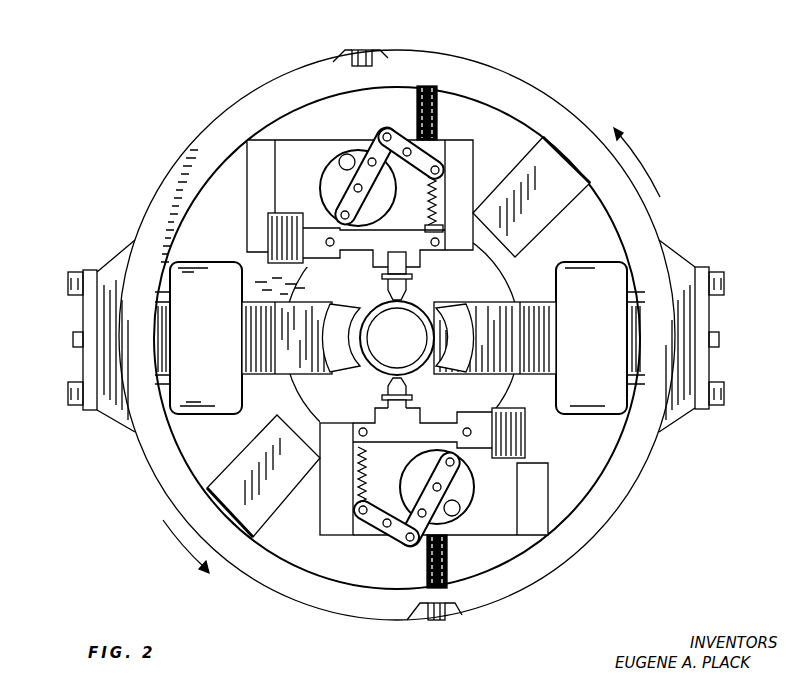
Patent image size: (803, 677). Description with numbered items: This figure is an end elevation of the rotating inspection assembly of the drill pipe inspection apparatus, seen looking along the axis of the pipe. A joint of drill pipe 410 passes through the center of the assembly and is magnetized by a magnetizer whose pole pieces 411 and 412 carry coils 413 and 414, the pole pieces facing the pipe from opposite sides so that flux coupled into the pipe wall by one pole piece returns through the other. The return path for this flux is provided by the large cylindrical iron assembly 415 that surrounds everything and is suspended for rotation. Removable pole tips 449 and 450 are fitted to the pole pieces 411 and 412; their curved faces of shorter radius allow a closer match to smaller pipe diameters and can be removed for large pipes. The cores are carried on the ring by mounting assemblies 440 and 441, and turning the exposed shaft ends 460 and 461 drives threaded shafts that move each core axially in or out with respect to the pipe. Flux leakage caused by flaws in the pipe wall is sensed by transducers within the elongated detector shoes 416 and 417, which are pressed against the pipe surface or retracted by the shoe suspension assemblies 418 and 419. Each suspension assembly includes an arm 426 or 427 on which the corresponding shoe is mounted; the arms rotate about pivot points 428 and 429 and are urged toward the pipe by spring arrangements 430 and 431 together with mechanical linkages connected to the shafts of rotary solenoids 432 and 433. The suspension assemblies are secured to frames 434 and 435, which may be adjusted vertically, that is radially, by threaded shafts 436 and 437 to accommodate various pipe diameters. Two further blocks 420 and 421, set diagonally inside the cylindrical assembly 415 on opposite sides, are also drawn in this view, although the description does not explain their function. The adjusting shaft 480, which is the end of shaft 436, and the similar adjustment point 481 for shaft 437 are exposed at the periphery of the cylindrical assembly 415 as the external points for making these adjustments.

The drill pipe 410 is at (386, 366).
The pole piece 411 is at (290, 362).
The pole piece 412 is at (490, 360).
The coil 413 is at (185, 402).
The coil 414 is at (610, 405).
The cylindrical iron assembly 415 is at (512, 86).
The detector shoe 416 is at (410, 297).
The detector shoe 417 is at (385, 393).
The shoe suspension assembly 418 is at (325, 160).
The shoe suspension assembly 419 is at (470, 512).
The upper right counterweight block 420 is at (552, 160).
The lower left counterweight block 421 is at (220, 499).
The arm 426 is at (418, 245).
The arm 427 is at (400, 438).
The pivot point 428 is at (330, 247).
The pivot point 429 is at (470, 437).
The spring arrangement 430 is at (440, 195).
The spring arrangement 431 is at (357, 488).
The rotary solenoid 432 is at (330, 191).
The rotary solenoid 433 is at (470, 497).
The frame 434 is at (290, 148).
The frame 435 is at (505, 525).
The threaded shaft 436 is at (372, 118).
The threaded shaft 437 is at (425, 562).
The mounting assembly 440 is at (71, 325).
The mounting assembly 441 is at (715, 320).
The removable pole tip 449 is at (348, 370).
The removable pole tip 450 is at (420, 373).
The outer end of shaft 460 is at (73, 340).
The exposed shaft end 461 is at (721, 340).
The adjusting shaft 480 is at (358, 50).
The adjustment point 481 is at (438, 625).